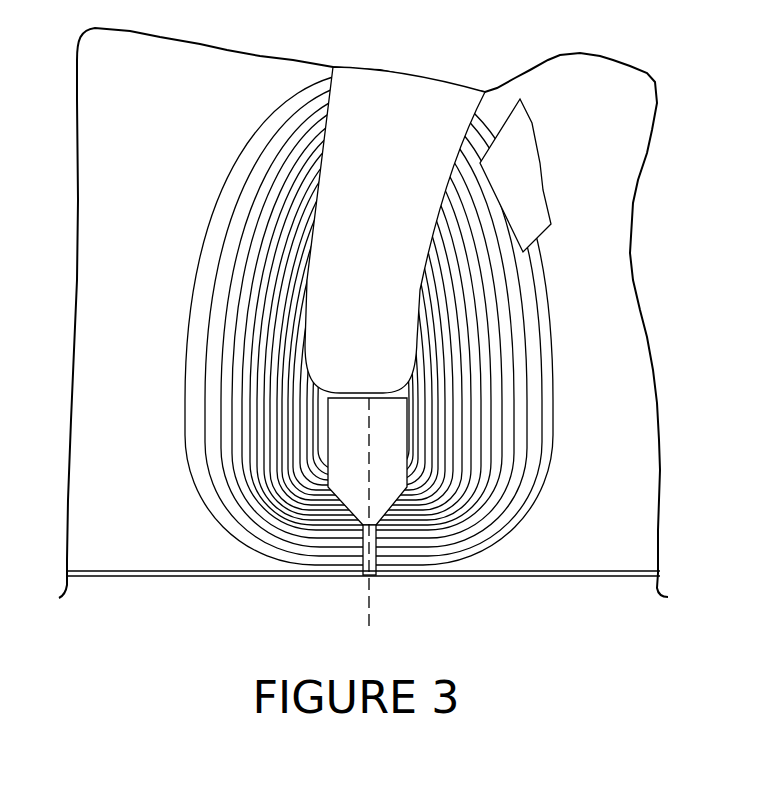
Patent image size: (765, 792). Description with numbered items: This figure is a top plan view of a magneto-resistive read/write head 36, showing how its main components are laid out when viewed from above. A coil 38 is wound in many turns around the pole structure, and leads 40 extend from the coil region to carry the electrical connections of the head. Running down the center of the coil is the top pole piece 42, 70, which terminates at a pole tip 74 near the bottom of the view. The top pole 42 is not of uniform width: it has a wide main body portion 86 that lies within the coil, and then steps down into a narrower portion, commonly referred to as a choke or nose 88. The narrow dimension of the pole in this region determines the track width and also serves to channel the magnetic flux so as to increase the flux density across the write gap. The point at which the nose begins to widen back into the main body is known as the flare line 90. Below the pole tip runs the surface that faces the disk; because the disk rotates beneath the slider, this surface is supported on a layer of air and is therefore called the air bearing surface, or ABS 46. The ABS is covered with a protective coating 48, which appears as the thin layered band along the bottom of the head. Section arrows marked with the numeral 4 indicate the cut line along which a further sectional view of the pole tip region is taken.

The magneto-resistive head 36 is at (160, 222).
The coil 38 is at (533, 440).
The leads 40 is at (375, 163).
The top pole piece 42 is at (219, 465).
The top pole piece 70 is at (343, 433).
The pole tip 74 is at (379, 582).
The main body portion 86 is at (400, 472).
The nose 88 is at (463, 557).
The flare line 90 is at (352, 532).
The air bearing surface 46 is at (563, 585).
The protective coating 48 is at (473, 576).
The section line 4- 4 is at (348, 412).